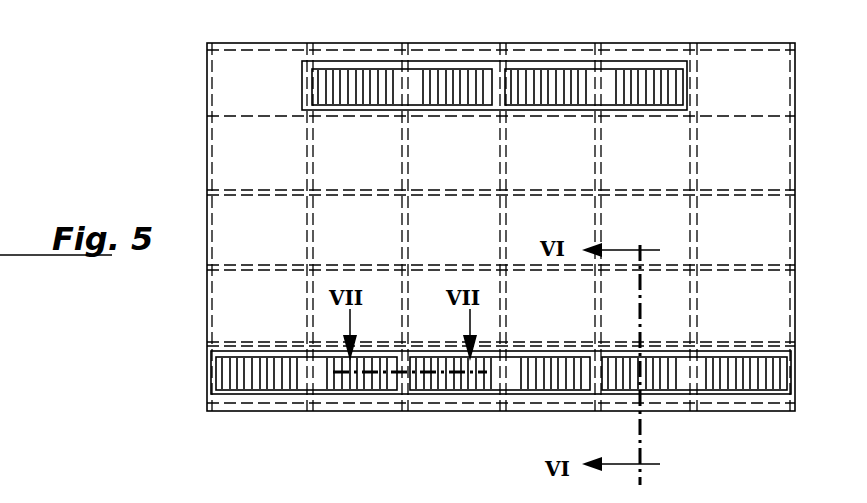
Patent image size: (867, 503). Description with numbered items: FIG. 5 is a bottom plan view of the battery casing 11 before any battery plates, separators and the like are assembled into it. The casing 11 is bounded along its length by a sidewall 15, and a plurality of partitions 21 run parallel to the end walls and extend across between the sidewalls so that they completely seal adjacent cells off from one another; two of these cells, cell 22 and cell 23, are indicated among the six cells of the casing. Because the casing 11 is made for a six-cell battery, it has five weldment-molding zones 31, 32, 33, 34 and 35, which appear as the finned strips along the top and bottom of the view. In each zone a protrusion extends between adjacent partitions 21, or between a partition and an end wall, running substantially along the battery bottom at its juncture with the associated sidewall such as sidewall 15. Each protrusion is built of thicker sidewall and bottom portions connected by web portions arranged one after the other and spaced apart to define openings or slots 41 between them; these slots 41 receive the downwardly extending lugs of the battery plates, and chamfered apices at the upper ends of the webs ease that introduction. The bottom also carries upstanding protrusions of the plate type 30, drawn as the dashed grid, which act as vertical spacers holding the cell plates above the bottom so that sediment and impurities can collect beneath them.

The casing 11 is at (196, 363).
The sidewall 15 is at (778, 412).
The partitions 21 is at (595, 315).
The cell 22 is at (243, 238).
The cell 23 is at (283, 268).
The upstanding protrusions of the plate type 30 is at (565, 268).
The weldment-molding zone 31 is at (345, 62).
The weldment-molding zone 32 is at (543, 68).
The weldment-molding zone 33 is at (298, 390).
The weldment-molding zone 34 is at (522, 393).
The weldment-molding zone 35 is at (712, 397).
The openings or slots 41 is at (757, 372).